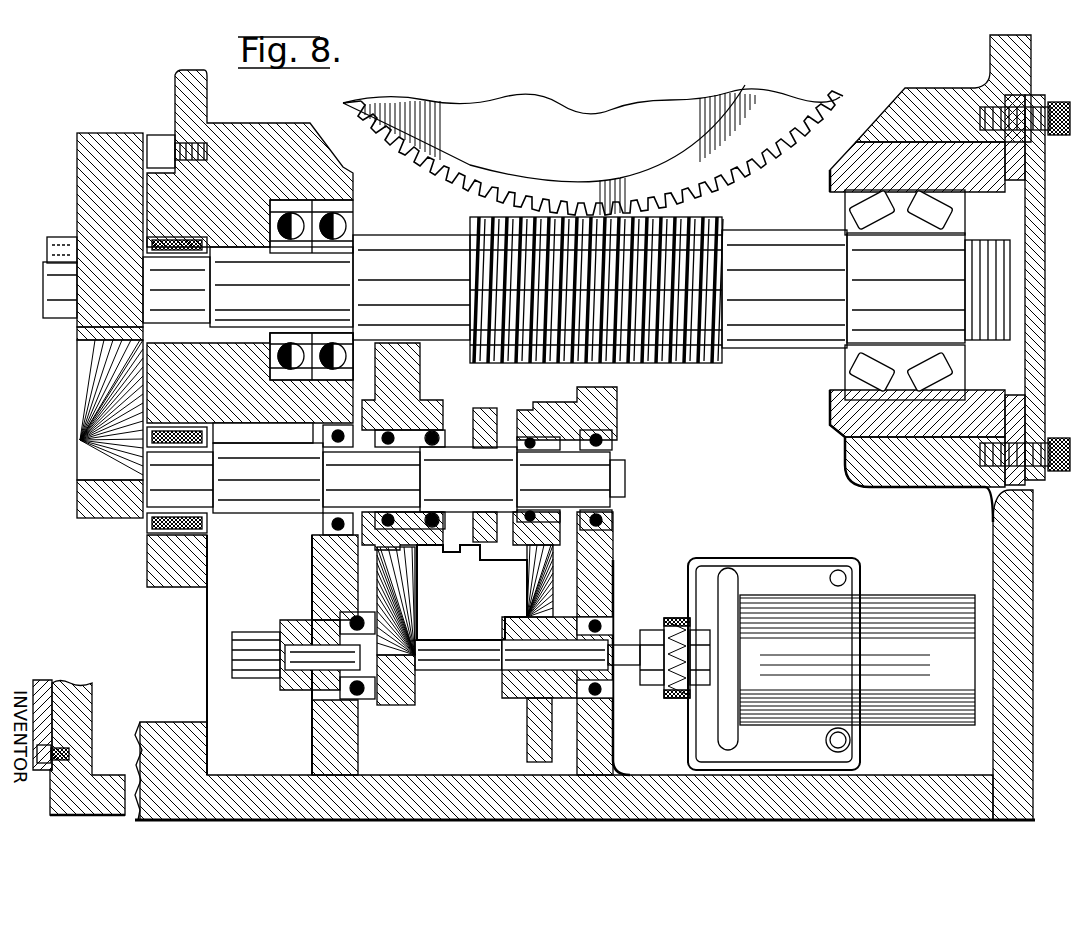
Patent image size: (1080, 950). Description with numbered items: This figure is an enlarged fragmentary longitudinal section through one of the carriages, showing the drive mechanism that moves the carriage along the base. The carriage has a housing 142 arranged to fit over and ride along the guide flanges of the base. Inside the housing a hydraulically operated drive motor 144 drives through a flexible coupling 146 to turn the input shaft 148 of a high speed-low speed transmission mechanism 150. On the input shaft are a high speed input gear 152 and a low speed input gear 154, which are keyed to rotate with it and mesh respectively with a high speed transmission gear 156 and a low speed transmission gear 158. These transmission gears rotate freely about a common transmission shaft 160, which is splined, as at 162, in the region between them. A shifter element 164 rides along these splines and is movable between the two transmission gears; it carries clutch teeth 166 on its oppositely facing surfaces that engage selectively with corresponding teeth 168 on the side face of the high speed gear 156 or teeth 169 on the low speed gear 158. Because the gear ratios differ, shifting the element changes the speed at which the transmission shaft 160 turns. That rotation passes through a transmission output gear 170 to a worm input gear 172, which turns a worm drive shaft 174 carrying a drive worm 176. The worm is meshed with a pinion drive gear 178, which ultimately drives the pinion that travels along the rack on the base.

The housing 142 is at (1000, 545).
The drive motor 144 is at (925, 584).
The flexible coupling 146 is at (668, 620).
The input shaft 148 is at (468, 680).
The high speed-low speed transmission mechanism 150 is at (488, 612).
The high speed input gear 152 is at (525, 747).
The low speed input gear 154 is at (397, 698).
The high speed transmission gear 156 is at (550, 403).
The low speed transmission gear 158 is at (416, 366).
The transmission shaft 160 is at (626, 480).
The splines 162 is at (455, 475).
The shifter element 164 is at (470, 548).
The clutch teeth 166 is at (430, 428).
The teeth 168 is at (505, 408).
The teeth 169 is at (440, 560).
The transmission output gear 170 is at (107, 512).
The worm input gear 172 is at (77, 172).
The worm drive shaft 174 is at (390, 248).
The drive worm 176 is at (697, 365).
The pinion drive gear 178 is at (352, 108).